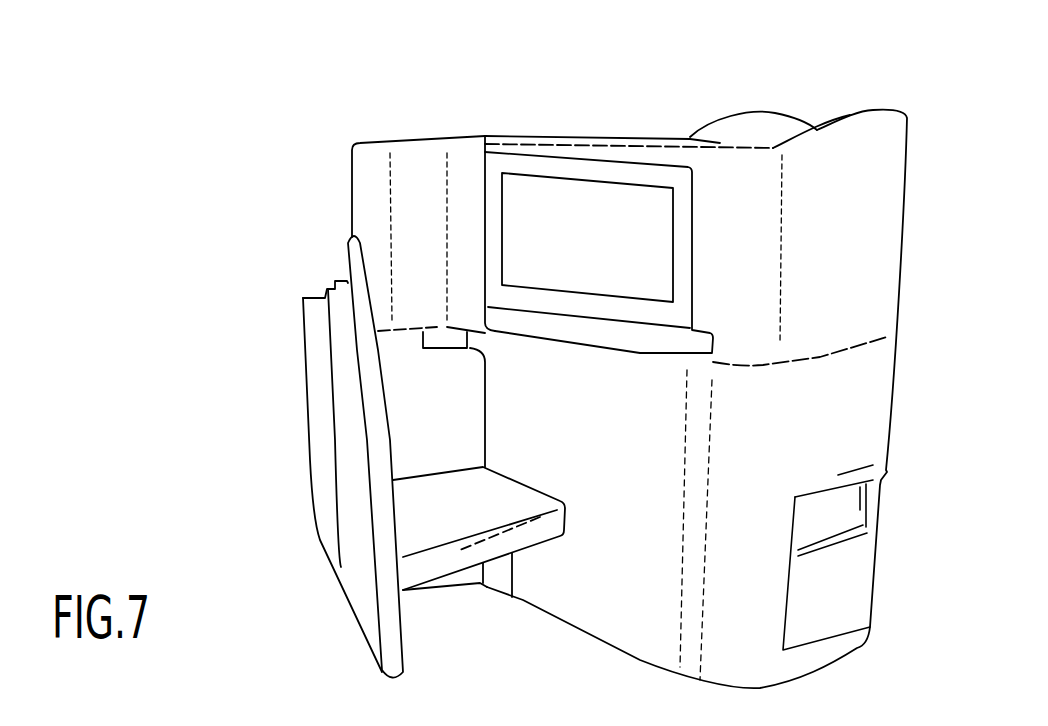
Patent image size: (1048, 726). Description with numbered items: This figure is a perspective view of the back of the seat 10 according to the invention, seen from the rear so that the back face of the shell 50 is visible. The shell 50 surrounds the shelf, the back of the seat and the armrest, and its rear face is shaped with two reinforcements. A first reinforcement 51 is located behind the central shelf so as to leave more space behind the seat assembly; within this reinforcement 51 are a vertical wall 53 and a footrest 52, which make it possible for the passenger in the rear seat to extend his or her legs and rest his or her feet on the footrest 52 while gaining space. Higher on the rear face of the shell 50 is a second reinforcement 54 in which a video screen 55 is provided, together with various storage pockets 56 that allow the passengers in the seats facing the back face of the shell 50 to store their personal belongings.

The seat 10 is at (760, 117).
The shell 50 is at (888, 168).
The reinforcement 51 is at (459, 611).
The footrest 52 is at (500, 543).
The vertical wall 53 is at (380, 498).
The reinforcement 54 is at (485, 137).
The video screen 55 is at (595, 212).
The storage pockets 56 is at (845, 572).